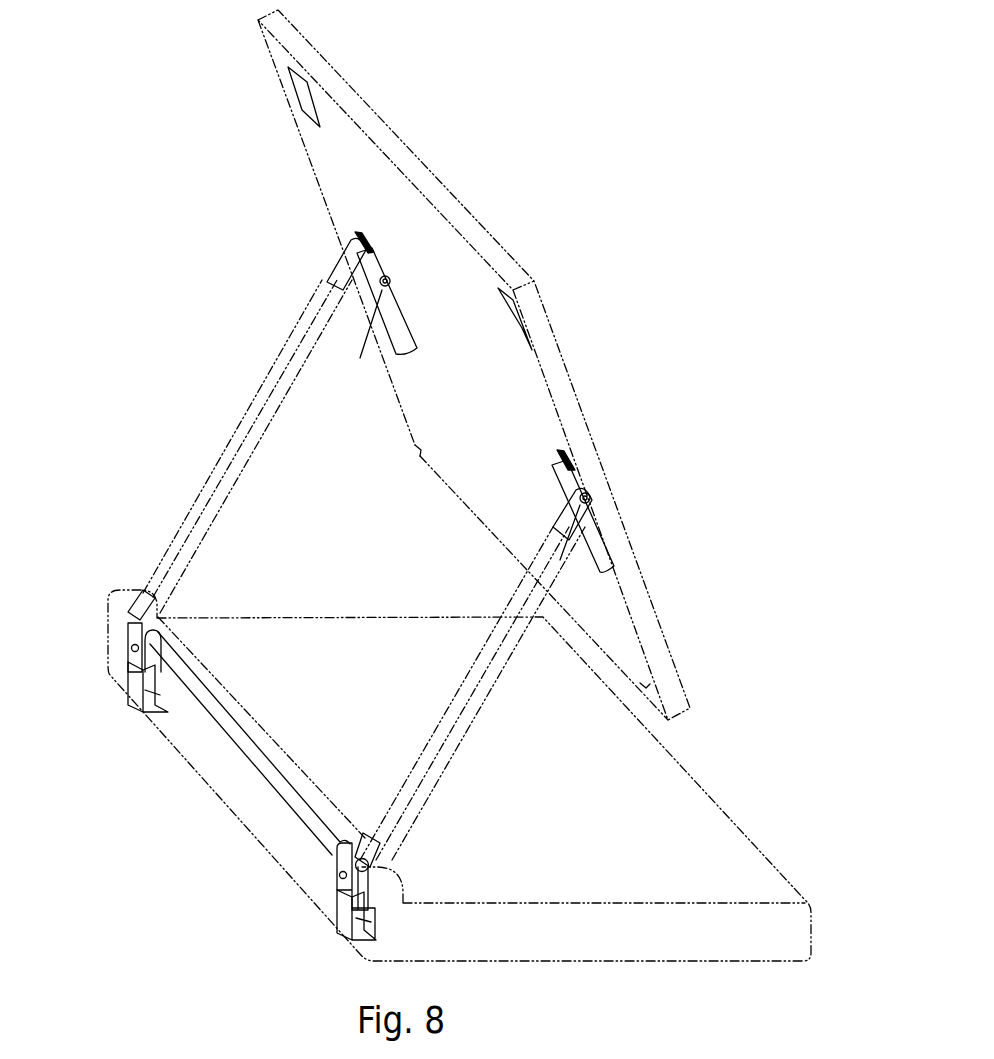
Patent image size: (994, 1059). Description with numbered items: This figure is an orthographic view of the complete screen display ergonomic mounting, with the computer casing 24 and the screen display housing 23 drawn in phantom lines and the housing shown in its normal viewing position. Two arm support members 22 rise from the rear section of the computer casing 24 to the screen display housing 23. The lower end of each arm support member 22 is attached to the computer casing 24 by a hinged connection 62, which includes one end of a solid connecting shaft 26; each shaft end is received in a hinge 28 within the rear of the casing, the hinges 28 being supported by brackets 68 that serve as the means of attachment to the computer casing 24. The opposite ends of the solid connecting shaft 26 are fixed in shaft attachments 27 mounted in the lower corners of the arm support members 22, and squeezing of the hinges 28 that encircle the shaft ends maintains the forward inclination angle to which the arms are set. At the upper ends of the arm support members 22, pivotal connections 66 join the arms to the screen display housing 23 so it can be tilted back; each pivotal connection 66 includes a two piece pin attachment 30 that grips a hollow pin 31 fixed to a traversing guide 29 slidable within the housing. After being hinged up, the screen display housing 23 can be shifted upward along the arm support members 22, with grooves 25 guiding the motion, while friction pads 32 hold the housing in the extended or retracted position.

The arm support member 22 is at (222, 453).
The screen display housing 23 is at (455, 190).
The computer casing 24 is at (733, 842).
The groove 25 is at (418, 452).
The solid connecting shaft 26 is at (243, 743).
The shaft attachment 27 is at (140, 595).
The hinge 28 is at (133, 650).
The traversing guide 29 is at (352, 245).
The two piece pin attachment 30 is at (330, 276).
The hollow pin 31 is at (382, 287).
The friction pad 32 is at (288, 77).
The hinged connection 62 is at (128, 630).
The pivotal connection 66 is at (330, 257).
The bracket 68 is at (132, 688).